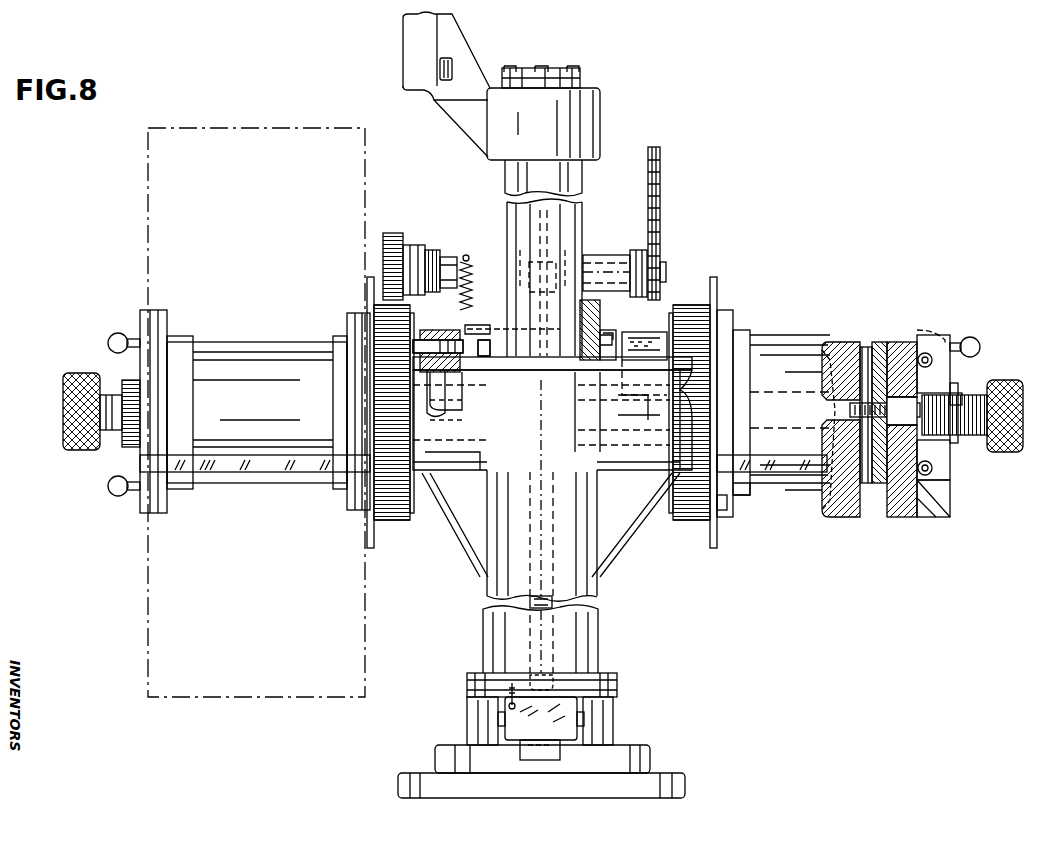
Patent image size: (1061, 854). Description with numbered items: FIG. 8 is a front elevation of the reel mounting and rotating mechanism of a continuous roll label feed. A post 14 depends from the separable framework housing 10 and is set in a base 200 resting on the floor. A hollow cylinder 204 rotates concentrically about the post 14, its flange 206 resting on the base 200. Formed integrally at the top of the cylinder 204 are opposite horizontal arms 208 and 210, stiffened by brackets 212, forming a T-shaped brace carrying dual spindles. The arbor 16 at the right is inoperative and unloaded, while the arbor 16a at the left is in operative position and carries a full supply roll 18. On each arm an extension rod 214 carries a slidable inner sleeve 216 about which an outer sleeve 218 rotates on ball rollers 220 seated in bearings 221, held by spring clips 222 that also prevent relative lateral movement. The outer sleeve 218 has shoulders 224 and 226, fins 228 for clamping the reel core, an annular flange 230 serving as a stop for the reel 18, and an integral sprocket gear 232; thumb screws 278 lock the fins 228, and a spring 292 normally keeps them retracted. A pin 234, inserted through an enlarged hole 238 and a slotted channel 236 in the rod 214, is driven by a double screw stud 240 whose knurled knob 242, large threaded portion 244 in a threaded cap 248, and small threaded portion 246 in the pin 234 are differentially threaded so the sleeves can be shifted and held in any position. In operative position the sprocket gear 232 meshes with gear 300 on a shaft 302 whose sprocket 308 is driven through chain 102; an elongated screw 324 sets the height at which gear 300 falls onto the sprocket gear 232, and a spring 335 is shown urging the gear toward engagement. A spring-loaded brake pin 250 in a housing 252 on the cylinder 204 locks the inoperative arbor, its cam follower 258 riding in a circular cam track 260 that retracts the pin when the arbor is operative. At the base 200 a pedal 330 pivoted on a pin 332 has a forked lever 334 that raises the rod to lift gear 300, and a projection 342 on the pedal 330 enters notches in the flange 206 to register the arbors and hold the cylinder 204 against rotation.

The framework housing 10 is at (465, 46).
The post 14 is at (583, 183).
The chain 102 is at (661, 166).
The gear 300 is at (391, 235).
The spring 335 is at (461, 256).
The sprocket 308 is at (640, 256).
The shaft 302 is at (662, 268).
The brake pin 250 is at (672, 302).
The annular flange 230 is at (718, 290).
The sprocket gear 232 is at (386, 520).
The fins 228 is at (218, 315).
The arbor 16a is at (243, 493).
The thumb screws 278 is at (107, 343).
The spring 292 is at (120, 392).
The cam follower 258 is at (485, 340).
The cam track 260 is at (602, 333).
The housing 252 is at (660, 345).
The horizontal arm 208 is at (640, 462).
The horizontal arm 210 is at (450, 462).
The brackets 212 is at (470, 543).
The slotted channel 236 is at (830, 372).
The small diameter threaded portion 246 is at (850, 408).
The enlarged hole 238 is at (862, 346).
The pin 234 is at (874, 344).
The inner sleeve 216 is at (888, 482).
The bearings 221 is at (915, 342).
The ball rollers 220 is at (925, 470).
The spring clips 222 is at (950, 480).
The shoulder 224 is at (925, 518).
The extension rod 214 is at (952, 455).
The threaded cap 248 is at (957, 390).
The large diameter threaded portion 244 is at (972, 400).
The knurled knob 242 is at (1024, 415).
The double screw stud 240 is at (1019, 462).
The outer sleeve 218 is at (808, 485).
The arbor 16 is at (797, 497).
The shoulder 226 is at (725, 510).
The supply roll 18 is at (365, 622).
The elongated screw 324 is at (555, 604).
The hollow cylinder 204 is at (599, 648).
The flange 206 is at (618, 685).
The projection 342 is at (523, 675).
The forked lever 334 is at (508, 688).
The pin 332 is at (497, 718).
The pedal 330 is at (562, 718).
The base 200 is at (651, 764).